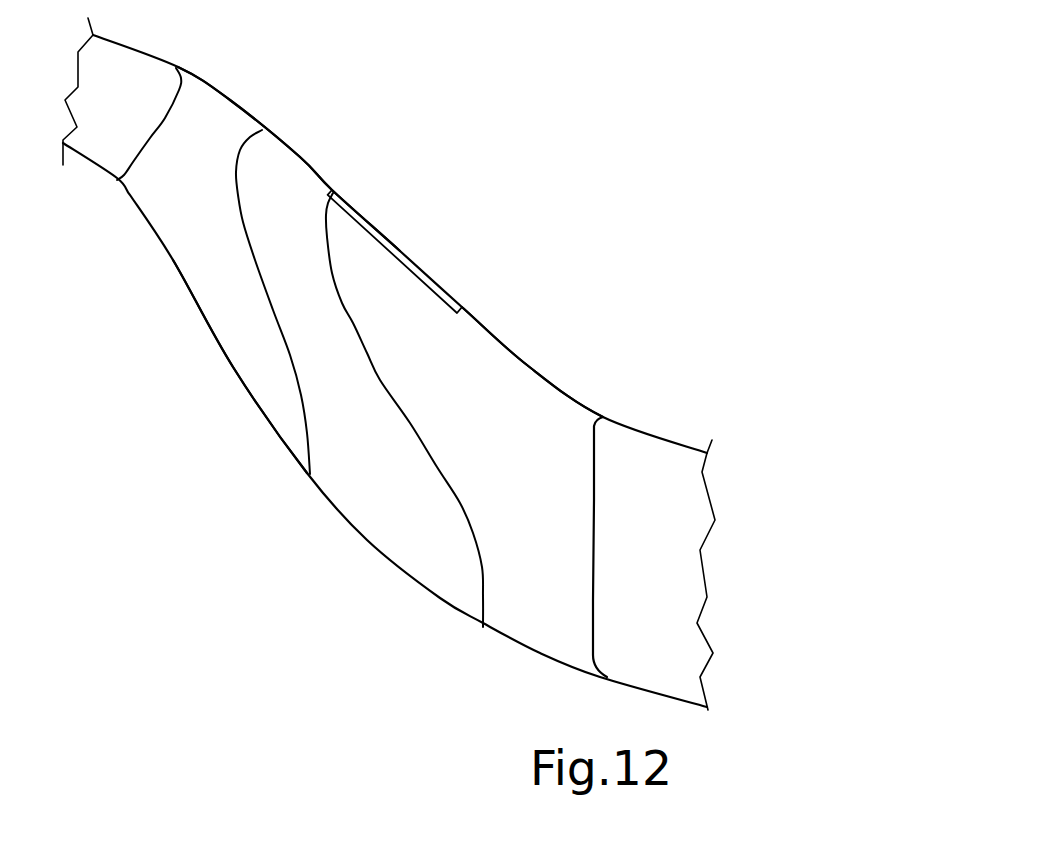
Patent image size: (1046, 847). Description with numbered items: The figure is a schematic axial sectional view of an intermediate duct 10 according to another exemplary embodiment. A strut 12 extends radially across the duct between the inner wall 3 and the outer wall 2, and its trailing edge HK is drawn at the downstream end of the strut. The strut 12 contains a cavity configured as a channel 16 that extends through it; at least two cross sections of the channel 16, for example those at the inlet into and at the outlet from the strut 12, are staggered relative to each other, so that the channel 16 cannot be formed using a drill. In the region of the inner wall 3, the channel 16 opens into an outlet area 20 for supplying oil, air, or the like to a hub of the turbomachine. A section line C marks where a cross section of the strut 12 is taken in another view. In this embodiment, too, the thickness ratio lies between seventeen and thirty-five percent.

The outer wall 2 is at (233, 367).
The inner wall 3 is at (230, 100).
The intermediate duct 10 is at (578, 156).
The strut 12 is at (508, 383).
The channel 16 is at (361, 153).
The outlet area 20 is at (418, 250).
The trailing edge HK is at (597, 503).
The section line C- C is at (662, 607).